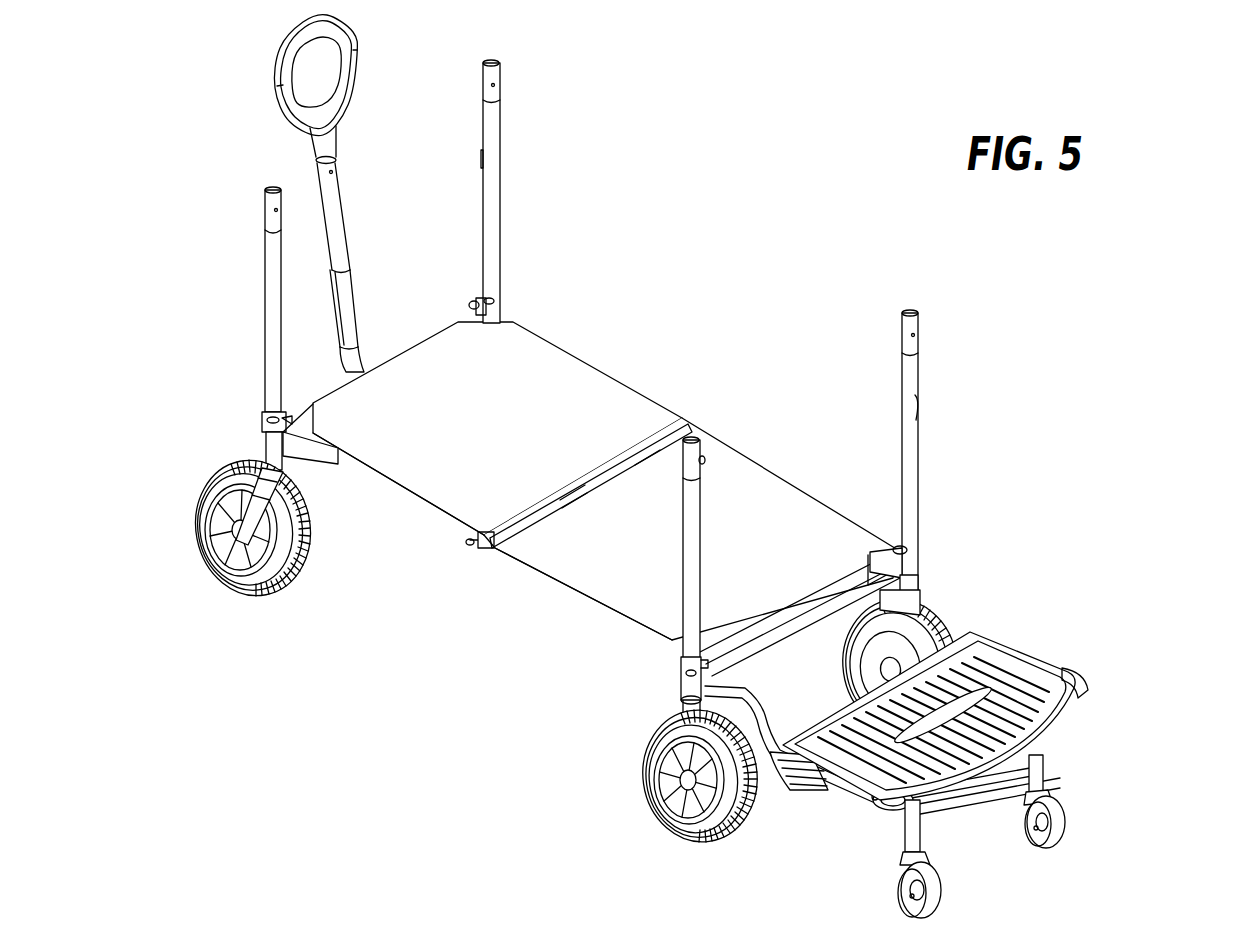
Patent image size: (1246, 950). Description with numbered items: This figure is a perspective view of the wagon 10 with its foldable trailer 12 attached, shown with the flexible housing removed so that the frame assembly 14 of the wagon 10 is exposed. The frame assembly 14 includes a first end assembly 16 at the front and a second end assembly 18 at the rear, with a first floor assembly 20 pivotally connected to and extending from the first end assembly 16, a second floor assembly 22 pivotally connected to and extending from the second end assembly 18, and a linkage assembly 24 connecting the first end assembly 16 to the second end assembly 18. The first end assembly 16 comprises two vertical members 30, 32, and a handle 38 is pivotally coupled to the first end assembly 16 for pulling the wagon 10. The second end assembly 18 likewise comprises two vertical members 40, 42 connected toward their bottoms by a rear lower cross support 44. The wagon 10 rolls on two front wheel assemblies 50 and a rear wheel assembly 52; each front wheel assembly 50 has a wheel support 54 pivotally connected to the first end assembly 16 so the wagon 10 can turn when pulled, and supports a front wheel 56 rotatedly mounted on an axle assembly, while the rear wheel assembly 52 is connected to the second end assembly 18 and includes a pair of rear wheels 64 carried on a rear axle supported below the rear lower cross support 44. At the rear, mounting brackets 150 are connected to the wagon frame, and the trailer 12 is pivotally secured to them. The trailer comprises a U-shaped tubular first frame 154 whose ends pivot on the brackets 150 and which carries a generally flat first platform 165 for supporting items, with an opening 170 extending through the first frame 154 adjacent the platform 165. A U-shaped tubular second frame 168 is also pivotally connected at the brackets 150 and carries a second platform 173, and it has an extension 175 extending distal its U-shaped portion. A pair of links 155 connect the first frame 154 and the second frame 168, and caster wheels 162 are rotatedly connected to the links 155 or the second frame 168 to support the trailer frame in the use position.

The wagon 10 is at (706, 216).
The foldable trailer 12 is at (962, 727).
The frame assembly 14 is at (492, 218).
The first end assembly 16 is at (262, 425).
The second end assembly 18 is at (915, 560).
The first floor assembly 20 is at (592, 420).
The second floor assembly 22 is at (740, 475).
The linkage assembly 24 is at (333, 462).
The vertical member 30 is at (492, 117).
The vertical member 32 is at (271, 298).
The handle 38 is at (333, 205).
The vertical member 40 is at (915, 375).
The vertical member 42 is at (690, 582).
The rear lower cross support 44 is at (837, 613).
The front wheel assembly 50 is at (205, 544).
The rear wheel assembly 52 is at (648, 788).
The wheel support 54 is at (222, 470).
The front wheel 56 is at (183, 542).
The rear wheel 64 is at (639, 795).
The mounting bracket 150 is at (915, 590).
The first frame 154 is at (1116, 679).
The link 155 is at (908, 812).
The caster wheel 162 is at (940, 890).
The first platform 165 is at (1020, 642).
The second frame 168 is at (812, 800).
The opening 170 is at (805, 672).
The second platform 173 is at (790, 762).
The extension 175 is at (950, 835).